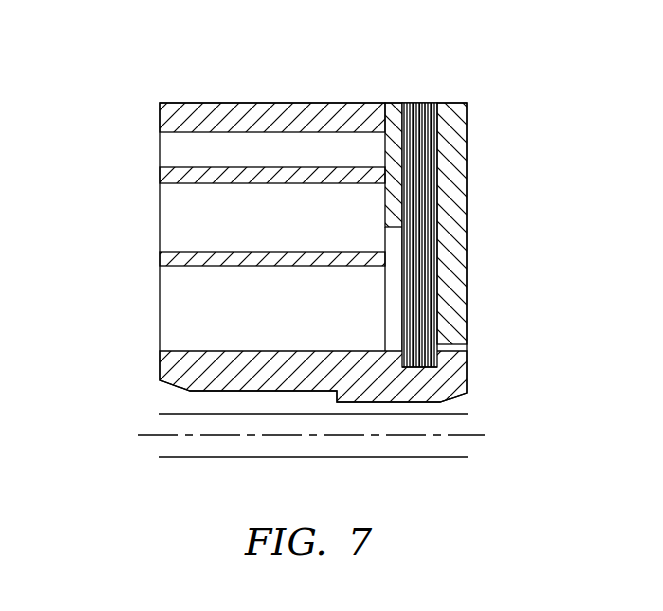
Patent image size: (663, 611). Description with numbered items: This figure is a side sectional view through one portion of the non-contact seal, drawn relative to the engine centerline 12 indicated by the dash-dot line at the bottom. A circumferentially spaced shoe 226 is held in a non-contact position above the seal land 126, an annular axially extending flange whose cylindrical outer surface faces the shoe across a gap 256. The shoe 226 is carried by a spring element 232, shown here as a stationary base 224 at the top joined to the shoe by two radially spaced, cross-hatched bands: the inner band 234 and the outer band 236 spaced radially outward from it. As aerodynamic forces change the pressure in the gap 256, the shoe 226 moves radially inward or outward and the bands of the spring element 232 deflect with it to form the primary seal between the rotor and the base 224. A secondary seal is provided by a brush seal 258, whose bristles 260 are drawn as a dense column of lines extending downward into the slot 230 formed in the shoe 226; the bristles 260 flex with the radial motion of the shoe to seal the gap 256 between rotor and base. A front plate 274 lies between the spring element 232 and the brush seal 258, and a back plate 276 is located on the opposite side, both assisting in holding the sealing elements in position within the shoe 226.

The spring element 232 is at (198, 78).
The stationary base 224 is at (290, 102).
The outer band 236 is at (160, 173).
The inner band 234 is at (160, 257).
The shoe 226 is at (160, 362).
The front plate 274 is at (394, 102).
The brush seal 258 is at (430, 92).
The bristles 260 is at (425, 275).
The back plate 276 is at (467, 201).
The slot 230 is at (398, 362).
The gap 256 is at (442, 408).
The axis 12 is at (148, 438).
The seal land 126 is at (446, 458).